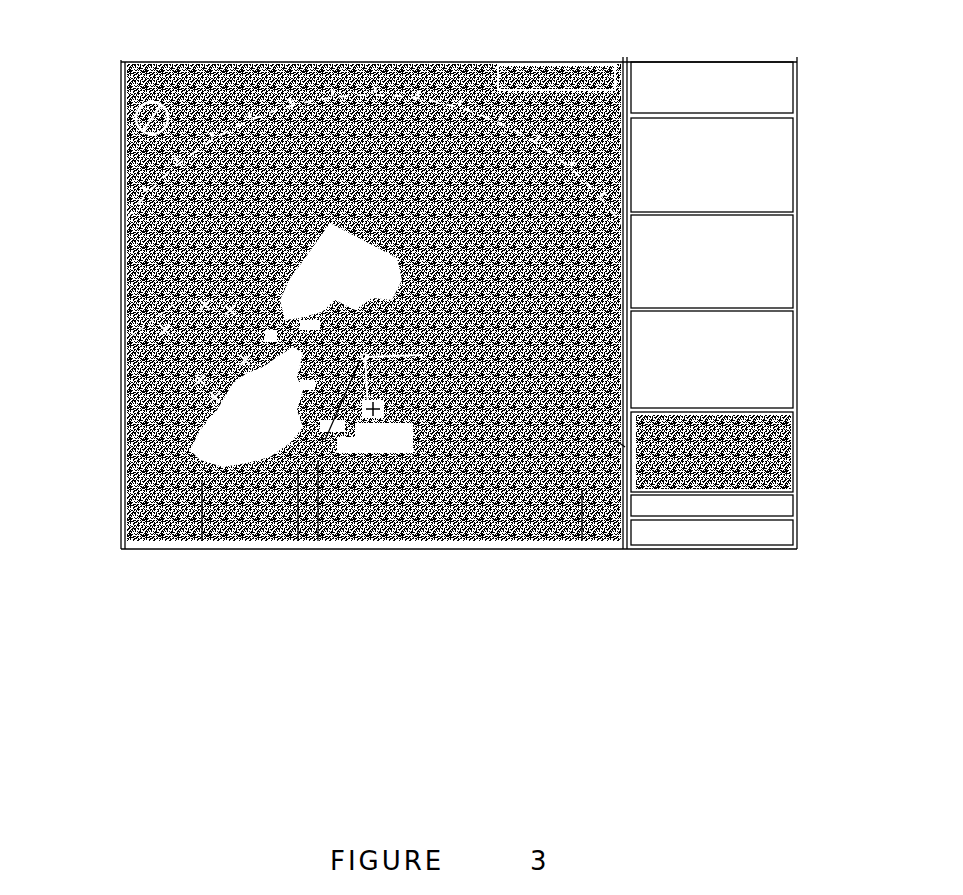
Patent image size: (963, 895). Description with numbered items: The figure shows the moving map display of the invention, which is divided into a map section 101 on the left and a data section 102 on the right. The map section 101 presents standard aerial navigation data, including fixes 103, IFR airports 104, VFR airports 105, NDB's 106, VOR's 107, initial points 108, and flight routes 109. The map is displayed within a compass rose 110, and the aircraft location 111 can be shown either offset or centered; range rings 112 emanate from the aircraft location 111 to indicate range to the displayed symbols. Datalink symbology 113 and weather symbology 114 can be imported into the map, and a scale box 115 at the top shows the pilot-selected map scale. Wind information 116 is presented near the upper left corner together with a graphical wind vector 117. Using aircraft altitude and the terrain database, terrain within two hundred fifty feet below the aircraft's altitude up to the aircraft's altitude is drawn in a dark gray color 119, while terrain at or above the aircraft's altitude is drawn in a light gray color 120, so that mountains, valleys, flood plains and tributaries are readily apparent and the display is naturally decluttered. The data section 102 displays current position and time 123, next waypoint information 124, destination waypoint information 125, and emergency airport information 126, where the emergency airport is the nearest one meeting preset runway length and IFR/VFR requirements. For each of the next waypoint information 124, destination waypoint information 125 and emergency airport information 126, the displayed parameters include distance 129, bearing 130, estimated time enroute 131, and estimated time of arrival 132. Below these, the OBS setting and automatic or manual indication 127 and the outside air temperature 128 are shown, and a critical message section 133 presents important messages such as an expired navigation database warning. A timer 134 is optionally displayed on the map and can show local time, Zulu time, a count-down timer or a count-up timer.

The map section 101 is at (482, 541).
The data section 102 is at (787, 540).
The fixes 103 is at (582, 541).
The IFR airports 104 is at (430, 541).
The VFR airports 105 is at (130, 235).
The NDB's 106 is at (530, 541).
The VOR's 107 is at (486, 495).
The initial points 108 is at (260, 541).
The flight routes 109 is at (318, 541).
The compass rose 110 is at (270, 87).
The aircraft location 111 is at (372, 541).
The range rings 112 is at (130, 473).
The datalink symbology 113 is at (625, 447).
The weather symbology 114 is at (130, 337).
The scale box 115 is at (567, 62).
The wind information 116 is at (170, 70).
The graphical wind vector 117 is at (133, 117).
The dark gray color 119 is at (298, 541).
The light gray color 120 is at (202, 541).
The current position and time 123 is at (782, 97).
The next waypoint information 124 is at (751, 167).
The destination waypoint information 125 is at (785, 282).
The emergency airport information 126 is at (785, 370).
The OBS setting and A or M 127 is at (792, 508).
The outside air temperature 128 is at (792, 528).
The distance 129 is at (750, 163).
The bearing 130 is at (737, 153).
The estimated time enroute (ETE) 131 is at (768, 183).
The estimated time of arrival (ETA) 132 is at (767, 200).
The critical message section 133 is at (782, 453).
The timer 134 is at (407, 541).